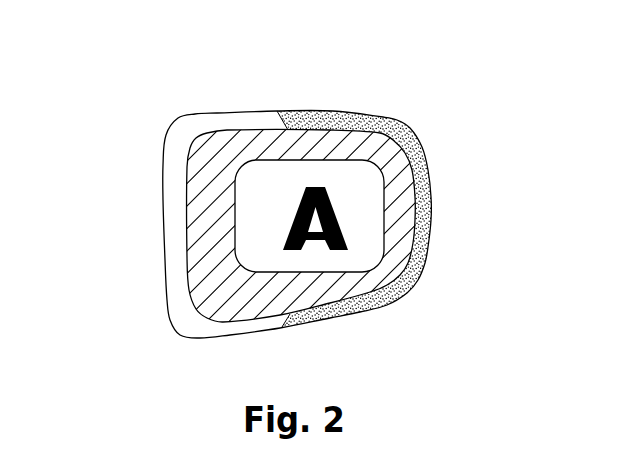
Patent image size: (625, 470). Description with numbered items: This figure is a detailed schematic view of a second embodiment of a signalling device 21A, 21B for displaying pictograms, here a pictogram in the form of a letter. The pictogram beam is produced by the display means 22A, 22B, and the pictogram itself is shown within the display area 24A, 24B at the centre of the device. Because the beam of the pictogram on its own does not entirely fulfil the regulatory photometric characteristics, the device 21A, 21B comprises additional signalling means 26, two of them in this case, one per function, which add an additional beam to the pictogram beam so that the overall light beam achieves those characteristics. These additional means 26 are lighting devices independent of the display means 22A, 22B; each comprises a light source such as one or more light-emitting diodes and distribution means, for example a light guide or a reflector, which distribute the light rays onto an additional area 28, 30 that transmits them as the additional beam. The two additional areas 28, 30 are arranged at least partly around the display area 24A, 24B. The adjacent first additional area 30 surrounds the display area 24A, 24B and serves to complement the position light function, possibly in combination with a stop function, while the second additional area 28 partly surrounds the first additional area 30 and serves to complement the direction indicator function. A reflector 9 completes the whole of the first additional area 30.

The reflector 9 is at (426, 205).
The signalling device 21A is at (312, 216).
The signalling device 21B is at (459, 158).
The display means 22A is at (312, 220).
The display means 22B is at (233, 197).
The display area 24A is at (309, 164).
The display area 24B is at (345, 176).
The additional signalling means 26 is at (183, 310).
The second additional area 28 is at (168, 235).
The first additional area 30 is at (343, 288).